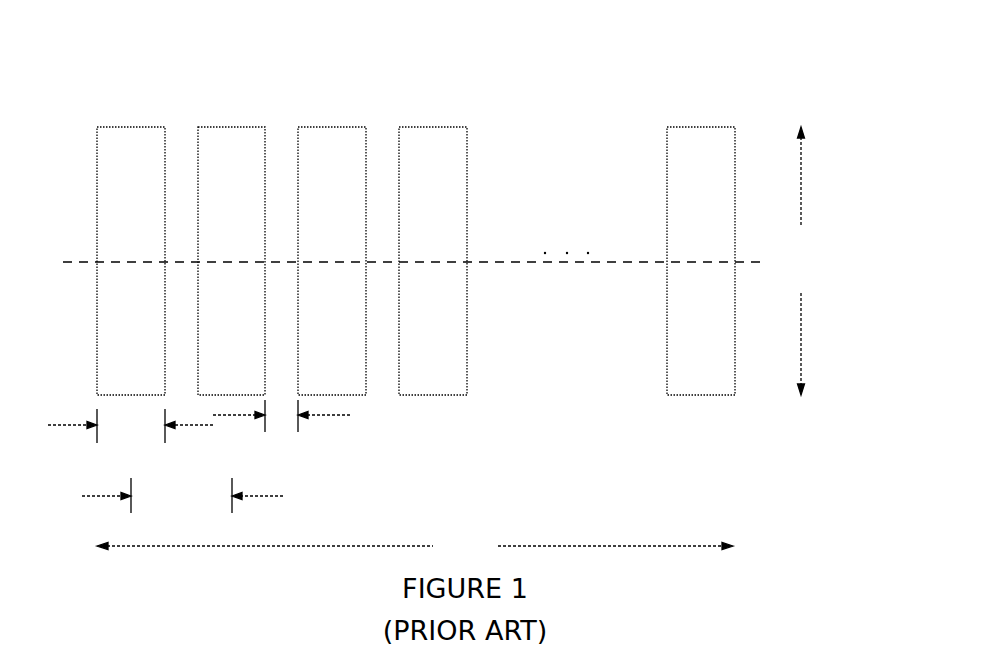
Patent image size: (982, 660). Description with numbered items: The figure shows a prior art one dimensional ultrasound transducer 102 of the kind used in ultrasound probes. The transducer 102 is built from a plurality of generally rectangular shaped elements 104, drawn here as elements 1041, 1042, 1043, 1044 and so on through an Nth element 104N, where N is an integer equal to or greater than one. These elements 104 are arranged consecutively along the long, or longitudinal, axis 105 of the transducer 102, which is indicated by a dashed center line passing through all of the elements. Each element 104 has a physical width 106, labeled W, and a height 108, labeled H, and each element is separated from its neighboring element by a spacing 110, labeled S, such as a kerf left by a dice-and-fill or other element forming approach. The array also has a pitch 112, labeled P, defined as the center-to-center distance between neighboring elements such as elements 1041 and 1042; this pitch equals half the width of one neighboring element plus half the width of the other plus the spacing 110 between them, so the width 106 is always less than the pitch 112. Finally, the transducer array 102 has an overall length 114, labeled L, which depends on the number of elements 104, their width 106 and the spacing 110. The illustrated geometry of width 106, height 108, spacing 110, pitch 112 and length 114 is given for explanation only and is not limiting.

The one dimensional transducer 102 is at (812, 38).
The elements 104 is at (104, 88).
The first element 1041 is at (133, 127).
The second element 1042 is at (232, 127).
The third element 1043 is at (333, 127).
The fourth element 1044 is at (433, 127).
The Nth element 104N is at (700, 127).
The longitudinal axis 105 is at (490, 261).
The width 106 is at (150, 460).
The height 108 is at (833, 236).
The spacing 110 is at (300, 463).
The pitch 112 is at (204, 526).
The length 114 is at (497, 513).